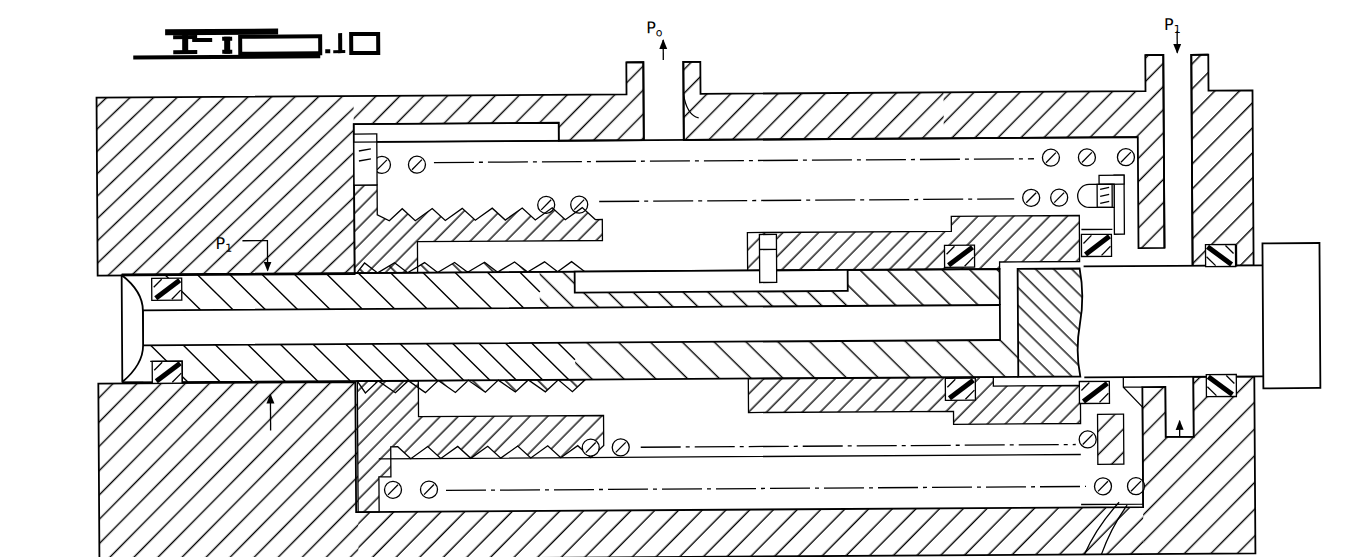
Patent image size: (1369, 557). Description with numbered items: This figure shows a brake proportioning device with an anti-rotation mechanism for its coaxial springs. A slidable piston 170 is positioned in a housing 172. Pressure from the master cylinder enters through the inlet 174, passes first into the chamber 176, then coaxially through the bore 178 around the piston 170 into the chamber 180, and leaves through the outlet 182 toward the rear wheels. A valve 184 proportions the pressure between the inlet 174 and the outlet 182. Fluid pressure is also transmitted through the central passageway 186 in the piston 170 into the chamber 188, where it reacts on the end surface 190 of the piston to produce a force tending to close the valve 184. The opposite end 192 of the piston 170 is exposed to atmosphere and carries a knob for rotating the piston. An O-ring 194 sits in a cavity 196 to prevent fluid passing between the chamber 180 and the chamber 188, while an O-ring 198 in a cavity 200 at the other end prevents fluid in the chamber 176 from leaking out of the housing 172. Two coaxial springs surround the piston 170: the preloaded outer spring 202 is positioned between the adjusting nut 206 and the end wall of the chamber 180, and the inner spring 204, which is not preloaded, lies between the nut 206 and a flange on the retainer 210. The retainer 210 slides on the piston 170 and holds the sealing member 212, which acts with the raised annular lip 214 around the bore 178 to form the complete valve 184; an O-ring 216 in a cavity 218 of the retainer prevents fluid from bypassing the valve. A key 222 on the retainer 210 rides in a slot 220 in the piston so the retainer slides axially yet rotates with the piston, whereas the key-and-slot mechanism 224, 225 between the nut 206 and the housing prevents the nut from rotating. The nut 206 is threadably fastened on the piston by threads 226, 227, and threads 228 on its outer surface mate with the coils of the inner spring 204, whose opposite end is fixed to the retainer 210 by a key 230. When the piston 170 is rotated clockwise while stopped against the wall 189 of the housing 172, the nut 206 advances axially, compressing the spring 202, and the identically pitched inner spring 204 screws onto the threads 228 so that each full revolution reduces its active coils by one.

The piston 170 is at (1202, 336).
The housing 172 is at (933, 94).
The inlet 174 is at (1216, 95).
The chamber 176 is at (1183, 447).
The bore 178 is at (1163, 264).
The chamber 180 is at (892, 192).
The outlet 182 is at (700, 90).
The valve 184 is at (1092, 273).
The central passageway 186 is at (925, 310).
The chamber 188 is at (148, 331).
The wall 189 is at (126, 300).
The end surface 190 is at (125, 355).
The opposite end 192 is at (1338, 394).
The O-ring 194 is at (165, 384).
The cavity 196 is at (181, 382).
The O-ring 198 is at (1230, 250).
The cavity 200 is at (1338, 242).
The outer spring 202 is at (440, 488).
The inner spring 204 is at (626, 452).
The adjusting nut 206 is at (360, 459).
The retainer 210 is at (842, 415).
The sealing member 212 is at (1086, 406).
The raised annular lip 214 is at (1136, 390).
The O-ring 216 is at (946, 250).
The cavity 218 is at (966, 236).
The slot 220 is at (620, 291).
The key 222 is at (762, 269).
The key 224 is at (365, 132).
The slot 225 is at (470, 122).
The threads 226 is at (560, 392).
The threads 227 is at (396, 380).
The threads 228 is at (426, 213).
The key 230 is at (1106, 194).